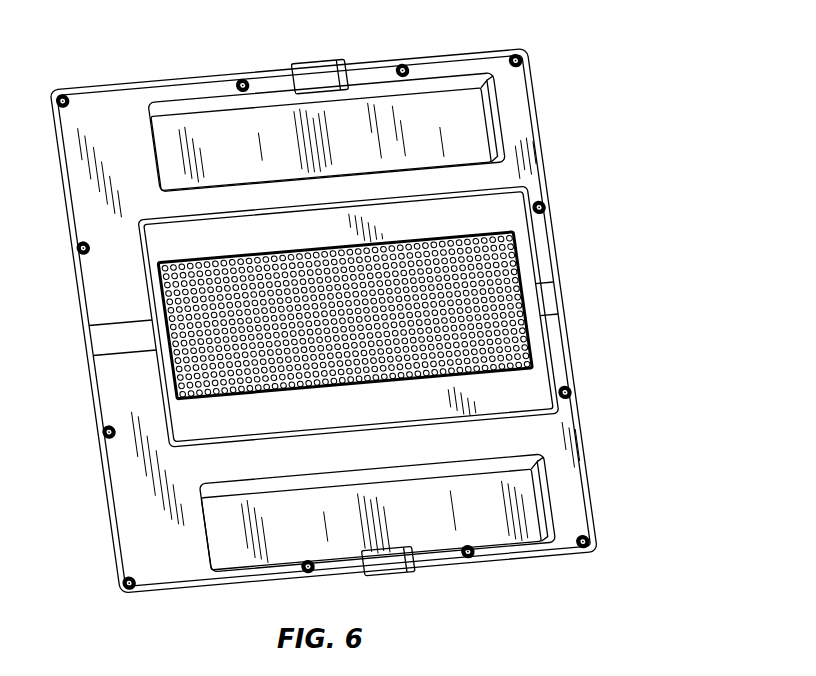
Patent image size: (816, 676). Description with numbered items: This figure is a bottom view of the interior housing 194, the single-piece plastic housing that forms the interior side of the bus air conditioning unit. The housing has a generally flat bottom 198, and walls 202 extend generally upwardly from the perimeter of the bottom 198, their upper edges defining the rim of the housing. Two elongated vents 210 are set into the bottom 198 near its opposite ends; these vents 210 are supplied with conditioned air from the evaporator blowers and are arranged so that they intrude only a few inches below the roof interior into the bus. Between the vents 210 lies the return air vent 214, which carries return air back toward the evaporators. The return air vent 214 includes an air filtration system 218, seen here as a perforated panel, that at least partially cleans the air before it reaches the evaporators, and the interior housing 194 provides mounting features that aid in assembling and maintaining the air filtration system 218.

The interior housing 194 is at (640, 217).
The bottom 198 is at (146, 182).
The walls 202 is at (528, 64).
The vents 210 is at (150, 137).
The return air vent 214 is at (513, 340).
The air filtration system 218 is at (452, 290).